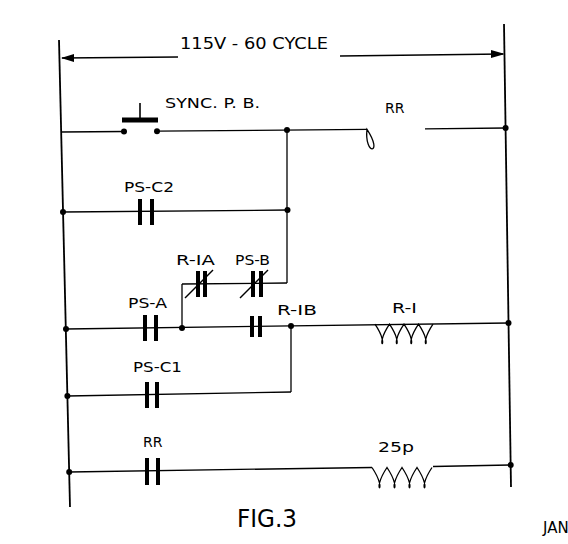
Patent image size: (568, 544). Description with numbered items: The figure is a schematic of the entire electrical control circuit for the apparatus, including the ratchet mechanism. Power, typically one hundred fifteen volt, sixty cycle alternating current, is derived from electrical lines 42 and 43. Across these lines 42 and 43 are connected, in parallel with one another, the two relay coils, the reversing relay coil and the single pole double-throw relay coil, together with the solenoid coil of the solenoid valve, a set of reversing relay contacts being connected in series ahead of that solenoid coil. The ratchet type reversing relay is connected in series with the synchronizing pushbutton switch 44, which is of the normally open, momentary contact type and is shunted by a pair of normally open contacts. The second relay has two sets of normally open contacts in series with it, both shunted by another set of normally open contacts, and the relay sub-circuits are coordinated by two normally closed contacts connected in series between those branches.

The electrical line 42 is at (58, 50).
The electrical line 43 is at (503, 44).
The synchronizing pushbutton switch 44 is at (131, 116).